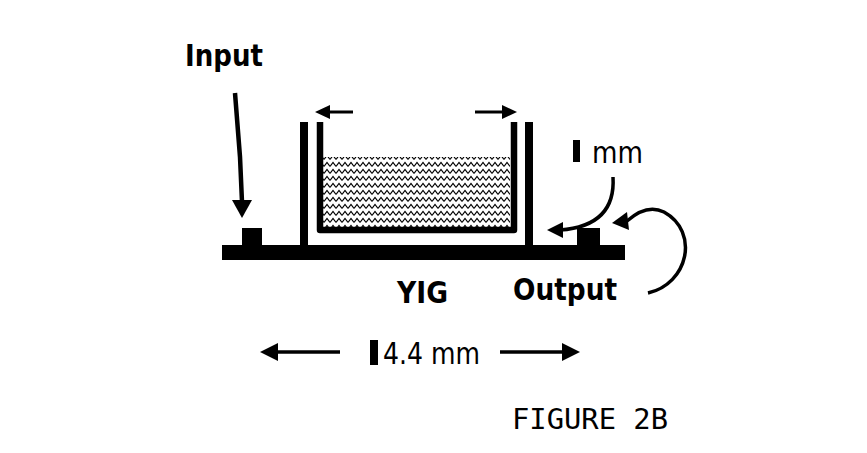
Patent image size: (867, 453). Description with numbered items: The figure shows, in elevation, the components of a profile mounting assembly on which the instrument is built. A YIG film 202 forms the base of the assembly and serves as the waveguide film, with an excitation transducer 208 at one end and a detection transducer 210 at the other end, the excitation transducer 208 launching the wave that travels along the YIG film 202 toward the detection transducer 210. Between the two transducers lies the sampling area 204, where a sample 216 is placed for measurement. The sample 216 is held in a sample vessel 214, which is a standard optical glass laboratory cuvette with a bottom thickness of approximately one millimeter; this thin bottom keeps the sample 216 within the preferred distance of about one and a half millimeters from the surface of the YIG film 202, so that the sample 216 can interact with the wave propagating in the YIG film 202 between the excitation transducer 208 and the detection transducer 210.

The YIG film 202 is at (355, 296).
The sampling area 204 is at (466, 70).
The excitation transducer 208 is at (162, 164).
The detection transducer 210 is at (600, 230).
The sample vessel 214 is at (319, 122).
The sample 216 is at (503, 182).